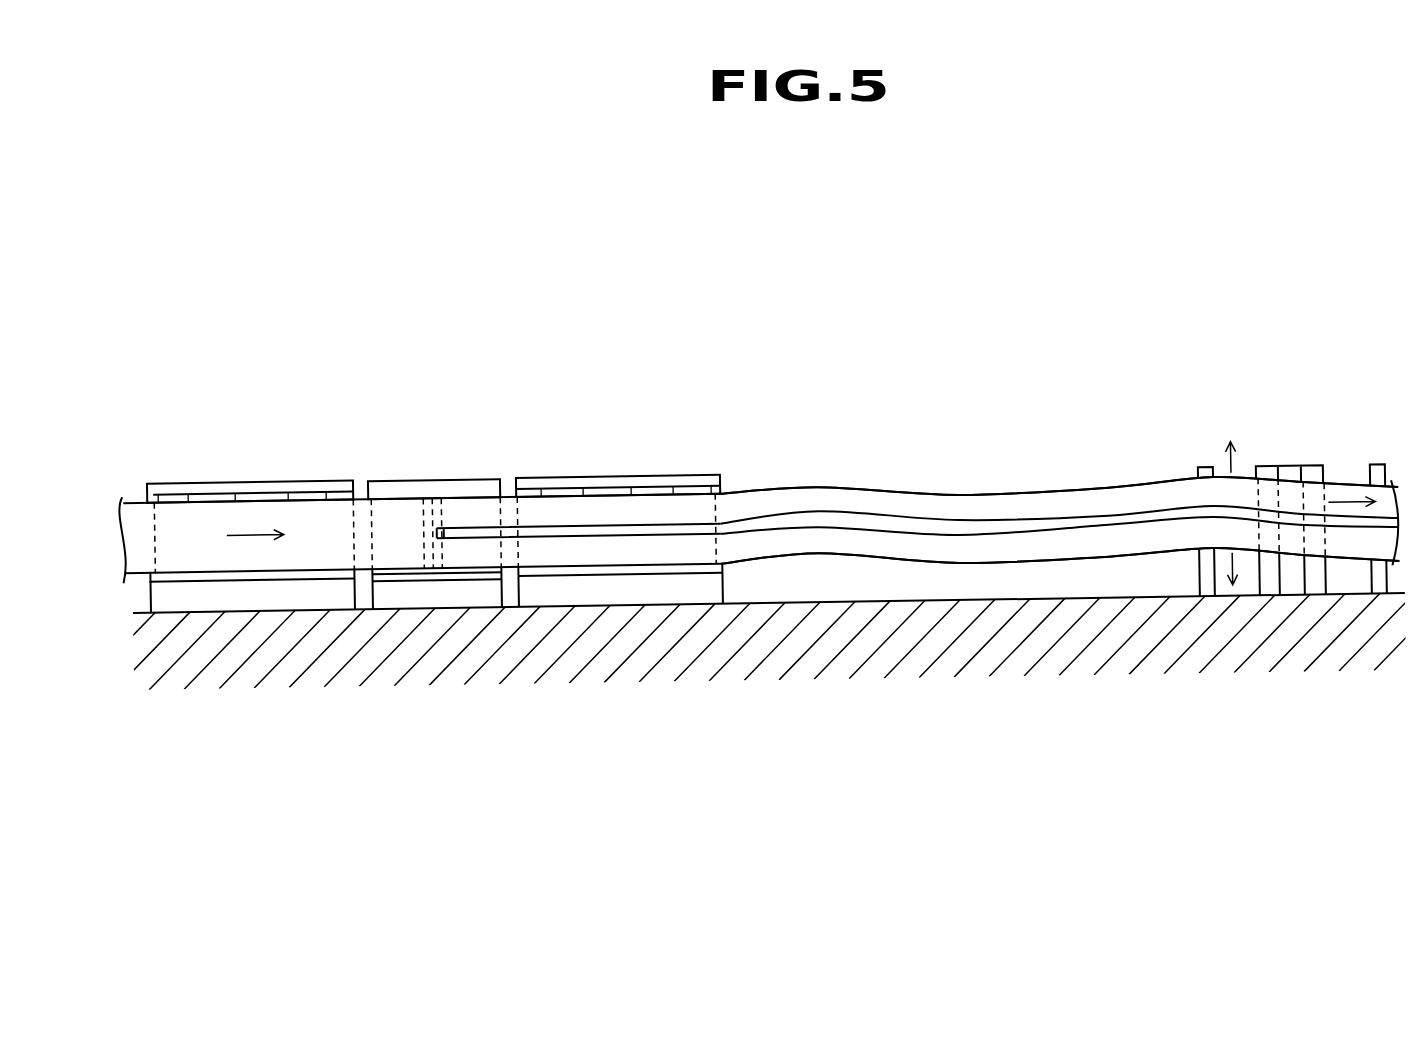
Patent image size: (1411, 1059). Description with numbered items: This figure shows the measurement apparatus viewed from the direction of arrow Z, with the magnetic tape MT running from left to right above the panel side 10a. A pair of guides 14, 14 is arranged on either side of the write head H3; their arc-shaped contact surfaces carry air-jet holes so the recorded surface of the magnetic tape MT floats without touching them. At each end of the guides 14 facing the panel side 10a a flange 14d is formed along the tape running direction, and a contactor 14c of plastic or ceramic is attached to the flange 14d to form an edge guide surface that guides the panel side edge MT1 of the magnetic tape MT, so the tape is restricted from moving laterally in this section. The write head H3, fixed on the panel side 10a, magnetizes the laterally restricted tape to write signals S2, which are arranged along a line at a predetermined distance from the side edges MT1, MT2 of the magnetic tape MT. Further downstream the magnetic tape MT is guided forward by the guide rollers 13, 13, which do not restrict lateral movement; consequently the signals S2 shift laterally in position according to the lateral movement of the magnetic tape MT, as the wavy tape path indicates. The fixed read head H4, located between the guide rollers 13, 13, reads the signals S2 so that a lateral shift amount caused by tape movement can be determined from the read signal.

The guide 14 is at (232, 480).
The contactor 14c is at (218, 573).
The flange 14d is at (240, 600).
The write head H3 is at (433, 478).
The read head H4 is at (1282, 465).
The guide roller 13 is at (1203, 462).
The magnetic tape MT is at (977, 503).
The panel side edge MT1 is at (1053, 563).
The side edge MT2 is at (1053, 490).
The signal S2 is at (900, 523).
The panel side 10a is at (1368, 628).